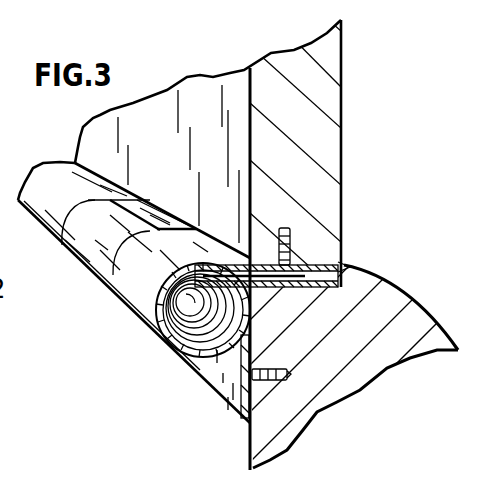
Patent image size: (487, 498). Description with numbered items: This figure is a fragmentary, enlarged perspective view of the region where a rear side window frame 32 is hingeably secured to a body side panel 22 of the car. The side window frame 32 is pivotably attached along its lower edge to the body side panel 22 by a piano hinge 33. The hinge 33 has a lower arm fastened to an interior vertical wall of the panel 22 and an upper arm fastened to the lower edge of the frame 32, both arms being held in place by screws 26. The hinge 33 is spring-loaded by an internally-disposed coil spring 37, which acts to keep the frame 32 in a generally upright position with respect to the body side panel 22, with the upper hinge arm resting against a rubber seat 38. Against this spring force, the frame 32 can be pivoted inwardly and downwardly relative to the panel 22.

The body side panel 22 is at (398, 350).
The screws 26 is at (291, 243).
The side window frame 32 is at (331, 186).
The piano hinge 33 is at (95, 281).
The coil spring 37 is at (173, 345).
The rubber seat 38 is at (347, 266).